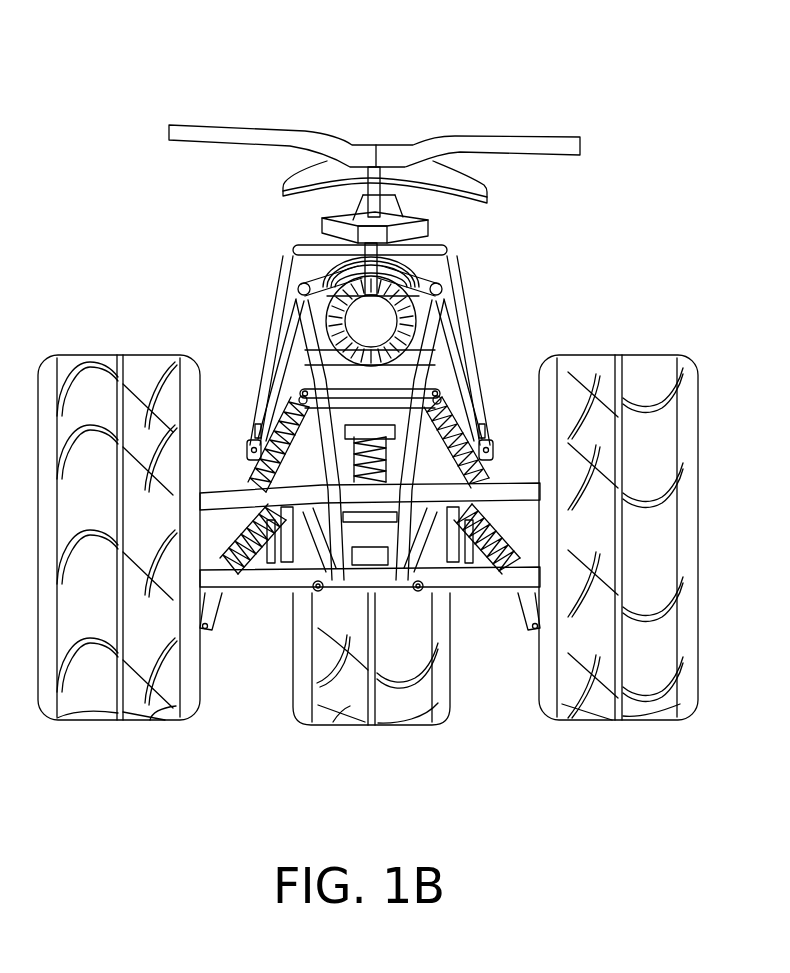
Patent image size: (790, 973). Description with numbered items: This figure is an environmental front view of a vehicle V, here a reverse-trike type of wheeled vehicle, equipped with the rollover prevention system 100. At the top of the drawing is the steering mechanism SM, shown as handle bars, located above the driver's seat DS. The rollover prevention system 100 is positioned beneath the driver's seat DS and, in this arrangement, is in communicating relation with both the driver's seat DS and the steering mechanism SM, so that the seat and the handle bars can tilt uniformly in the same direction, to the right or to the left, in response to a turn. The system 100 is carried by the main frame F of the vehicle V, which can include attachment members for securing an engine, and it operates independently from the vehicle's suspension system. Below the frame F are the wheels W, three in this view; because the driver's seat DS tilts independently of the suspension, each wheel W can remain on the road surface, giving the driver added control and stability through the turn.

The vehicle V is at (347, 62).
The steering mechanism SM is at (227, 123).
The driver's seat DS is at (475, 187).
The rollover prevention system 100 is at (362, 308).
The main frame F is at (492, 328).
The wheel W is at (95, 725).